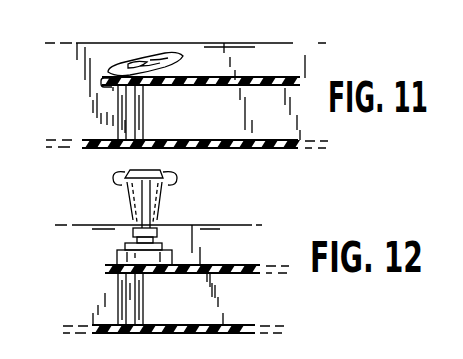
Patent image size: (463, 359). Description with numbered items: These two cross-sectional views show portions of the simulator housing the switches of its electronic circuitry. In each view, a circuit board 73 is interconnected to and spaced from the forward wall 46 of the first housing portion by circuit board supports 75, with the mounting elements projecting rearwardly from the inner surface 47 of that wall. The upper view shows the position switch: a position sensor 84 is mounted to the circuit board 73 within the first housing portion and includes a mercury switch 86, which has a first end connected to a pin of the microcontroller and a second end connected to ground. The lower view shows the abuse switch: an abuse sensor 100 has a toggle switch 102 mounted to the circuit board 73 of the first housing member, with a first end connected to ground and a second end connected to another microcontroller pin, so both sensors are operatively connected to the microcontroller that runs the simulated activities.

In FIG. 11, the forward wall 46 is at (97, 148).
In FIG. 12, the forward wall 46 is at (107, 328).
In FIG. 11, the inner surface 47 is at (272, 145).
In FIG. 12, the inner surface 47 is at (240, 325).
In FIG. 11, the circuit board 73 is at (282, 78).
In FIG. 12, the circuit board 73 is at (242, 265).
In FIG. 11, the circuit board supports 75 is at (93, 112).
In FIG. 12, the circuit board supports 75 is at (130, 298).
In FIG. 11, the position sensor 84 is at (133, 58).
In FIG. 11, the mercury switch 86 is at (166, 52).
In FIG. 12, the abuse sensor 100 is at (116, 197).
In FIG. 12, the toggle switch 102 is at (158, 170).